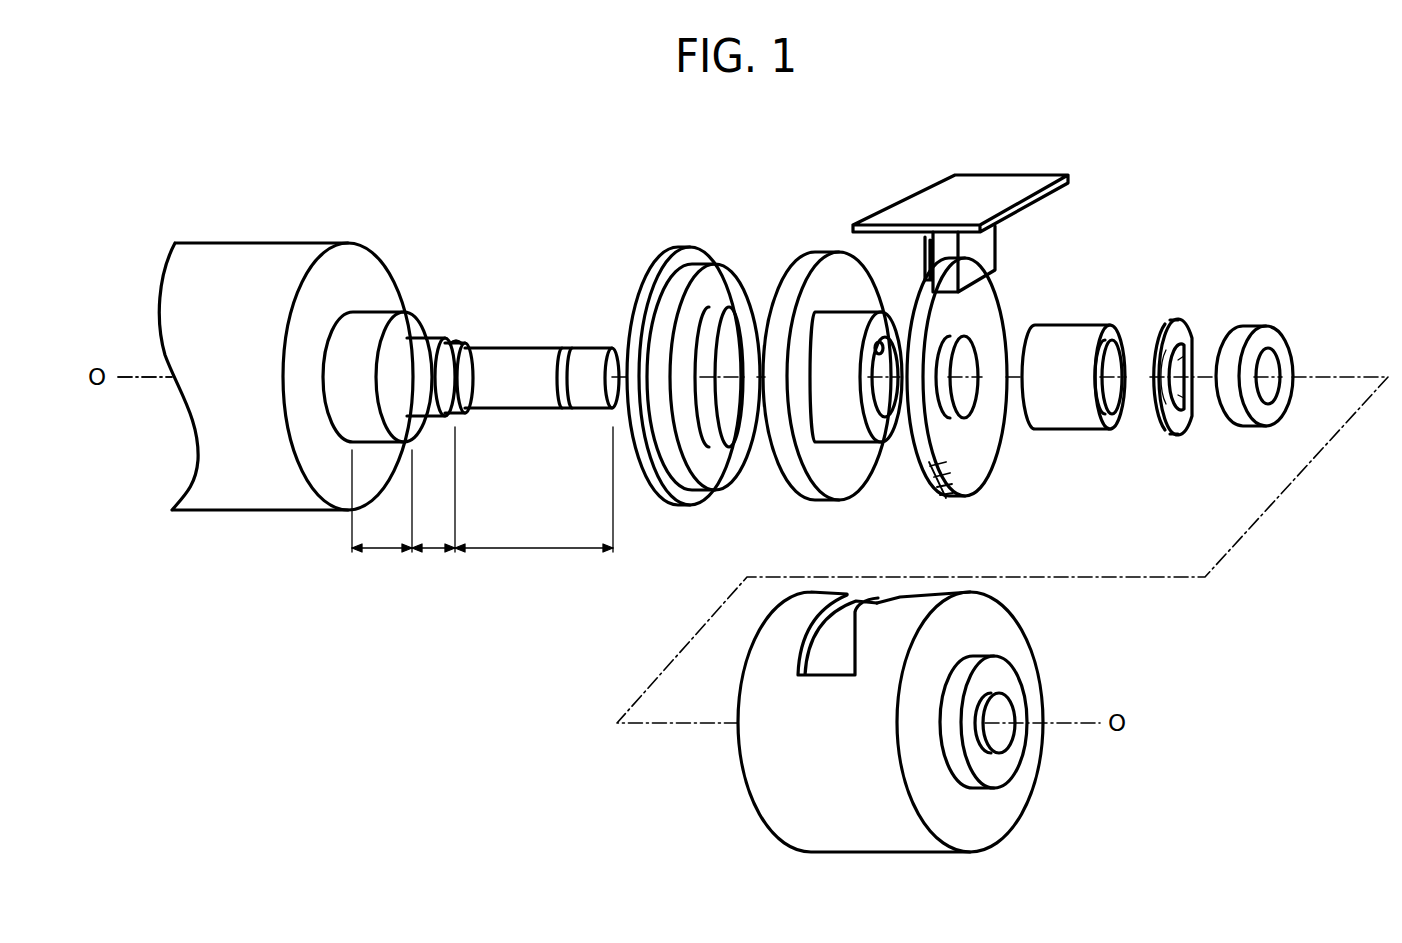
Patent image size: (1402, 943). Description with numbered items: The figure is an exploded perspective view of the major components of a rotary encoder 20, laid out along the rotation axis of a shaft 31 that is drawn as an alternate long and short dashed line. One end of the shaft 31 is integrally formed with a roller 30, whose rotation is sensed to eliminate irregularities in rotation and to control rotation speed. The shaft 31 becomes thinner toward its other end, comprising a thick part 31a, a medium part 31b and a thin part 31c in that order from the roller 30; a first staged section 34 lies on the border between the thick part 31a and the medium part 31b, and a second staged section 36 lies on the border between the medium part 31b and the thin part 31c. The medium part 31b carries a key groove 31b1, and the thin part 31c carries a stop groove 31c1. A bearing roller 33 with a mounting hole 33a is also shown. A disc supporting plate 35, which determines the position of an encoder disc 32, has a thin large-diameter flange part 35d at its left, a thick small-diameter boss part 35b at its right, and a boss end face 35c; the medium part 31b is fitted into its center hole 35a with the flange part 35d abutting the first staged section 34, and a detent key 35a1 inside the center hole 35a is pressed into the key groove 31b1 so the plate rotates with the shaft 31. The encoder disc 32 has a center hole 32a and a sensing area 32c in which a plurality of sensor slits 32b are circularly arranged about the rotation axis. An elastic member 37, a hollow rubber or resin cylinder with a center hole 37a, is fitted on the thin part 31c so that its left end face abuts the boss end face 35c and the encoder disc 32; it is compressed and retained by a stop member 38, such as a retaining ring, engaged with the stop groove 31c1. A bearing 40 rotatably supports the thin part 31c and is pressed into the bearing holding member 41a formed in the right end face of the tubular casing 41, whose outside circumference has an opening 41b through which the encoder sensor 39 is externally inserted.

The rotary encoder 20 is at (464, 134).
The roller 30 is at (256, 250).
The shaft 31 is at (548, 264).
The thick part 31a is at (482, 489).
The medium part 31b is at (432, 550).
The key groove 31b1 is at (458, 341).
The thin part 31c is at (542, 447).
The stop groove 31c1 is at (574, 347).
The encoder disc 32 is at (1035, 450).
The center hole 32a is at (952, 392).
The sensor slits 32b is at (948, 500).
The sensing area 32c is at (987, 468).
The bearing roller 33 is at (675, 288).
The mounting hole 33a is at (720, 437).
The first staged section 34 is at (421, 331).
The disc supporting plate 35 is at (808, 234).
The center hole 35a is at (882, 404).
The detent key 35a1 is at (881, 342).
The boss part 35b is at (838, 432).
The boss end face 35c is at (881, 430).
The flange part 35d is at (786, 482).
The second staged section 36 is at (464, 413).
The elastic member 37 is at (1071, 325).
The center hole 37a is at (1112, 420).
The stop member 38 is at (1178, 322).
The encoder sensor 39 is at (992, 252).
The bearing 40 is at (1246, 333).
The casing 41 is at (752, 768).
The bearing holding member 41a is at (1013, 760).
The opening 41b is at (827, 647).